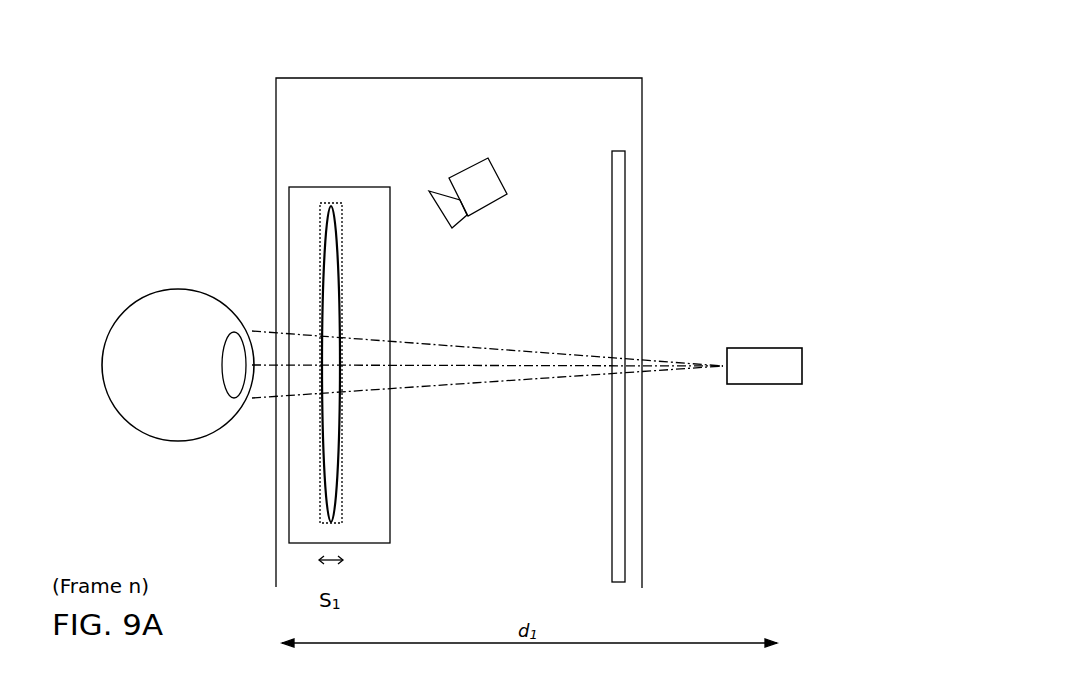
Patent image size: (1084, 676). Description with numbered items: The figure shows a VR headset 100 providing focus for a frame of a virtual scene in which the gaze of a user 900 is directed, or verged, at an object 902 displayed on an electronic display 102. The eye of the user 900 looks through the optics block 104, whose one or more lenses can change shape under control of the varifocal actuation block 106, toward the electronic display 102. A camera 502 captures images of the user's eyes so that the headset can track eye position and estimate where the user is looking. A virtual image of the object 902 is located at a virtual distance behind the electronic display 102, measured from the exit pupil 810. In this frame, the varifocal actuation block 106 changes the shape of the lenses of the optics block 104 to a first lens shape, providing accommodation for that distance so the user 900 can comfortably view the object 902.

The VR headset 100 is at (640, 88).
The electronic display 102 is at (620, 180).
The optics block 104 is at (331, 208).
The varifocal actuation block 106 is at (390, 485).
The camera 502 is at (478, 175).
The exit pupil 810 is at (262, 418).
The user 900 is at (113, 330).
The object 902 is at (762, 348).